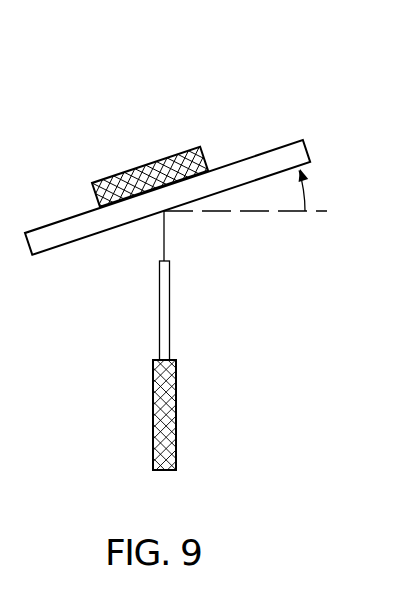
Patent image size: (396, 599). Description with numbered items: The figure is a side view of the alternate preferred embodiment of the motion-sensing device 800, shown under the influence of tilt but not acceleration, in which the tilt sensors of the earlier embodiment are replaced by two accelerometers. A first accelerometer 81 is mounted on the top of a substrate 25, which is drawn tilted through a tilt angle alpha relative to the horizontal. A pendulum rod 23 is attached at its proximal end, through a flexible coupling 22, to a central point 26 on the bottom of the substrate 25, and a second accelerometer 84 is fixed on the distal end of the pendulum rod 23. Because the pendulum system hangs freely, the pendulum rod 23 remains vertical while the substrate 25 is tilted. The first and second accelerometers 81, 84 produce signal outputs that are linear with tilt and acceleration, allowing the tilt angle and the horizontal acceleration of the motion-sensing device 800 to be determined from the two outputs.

The motion-sensing device 800 is at (158, 60).
The substrate 25 is at (242, 165).
The first accelerometer 81 is at (97, 181).
The central point 26 is at (162, 214).
The flexible coupling 22 is at (160, 260).
The pendulum rod 23 is at (165, 280).
The second accelerometer 84 is at (158, 390).